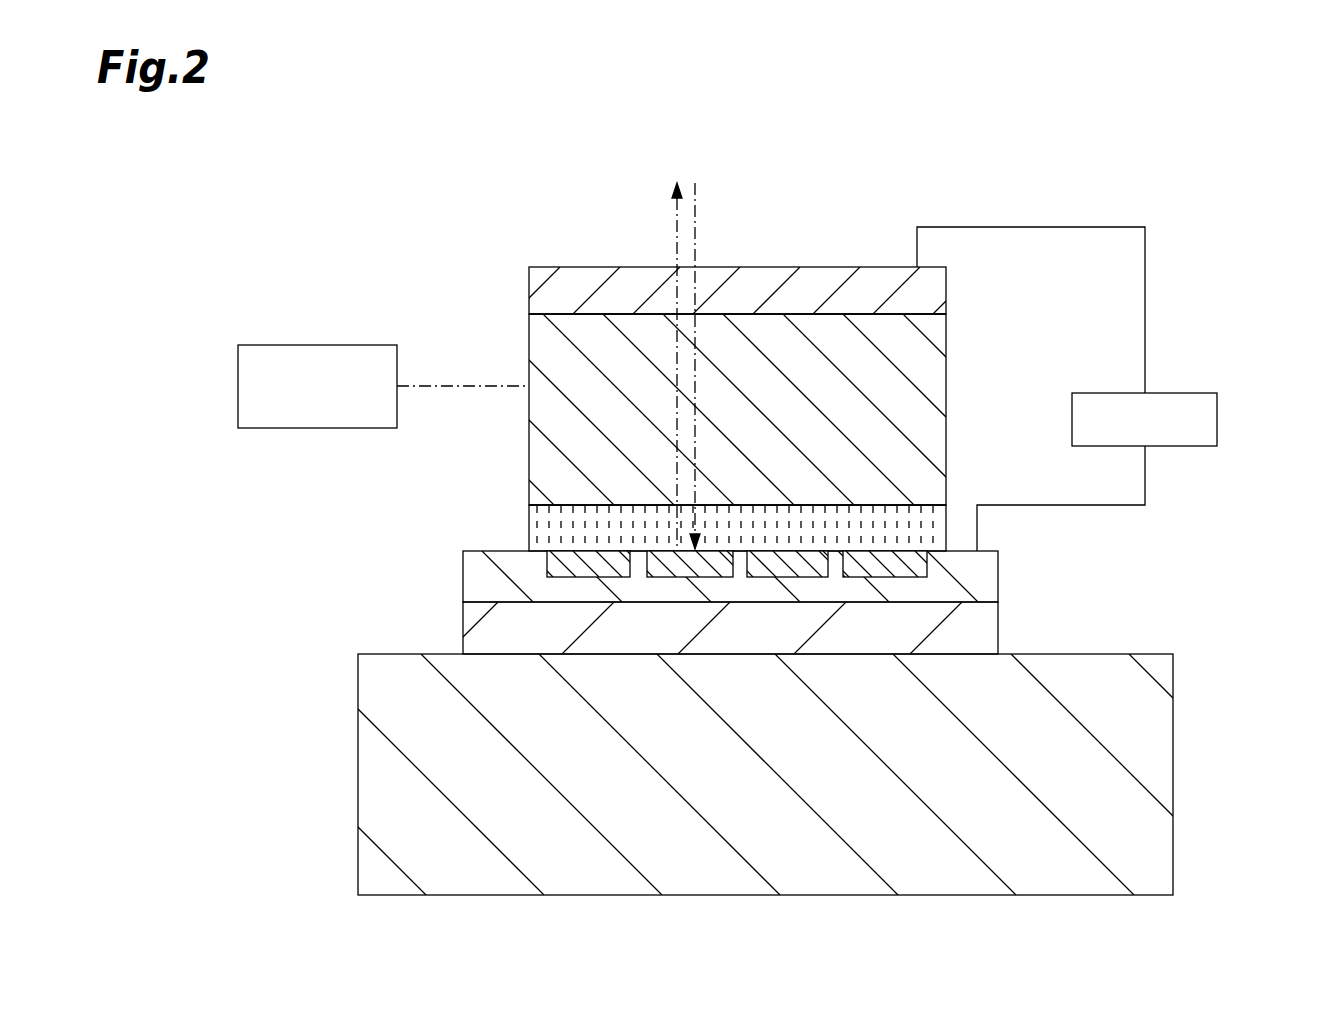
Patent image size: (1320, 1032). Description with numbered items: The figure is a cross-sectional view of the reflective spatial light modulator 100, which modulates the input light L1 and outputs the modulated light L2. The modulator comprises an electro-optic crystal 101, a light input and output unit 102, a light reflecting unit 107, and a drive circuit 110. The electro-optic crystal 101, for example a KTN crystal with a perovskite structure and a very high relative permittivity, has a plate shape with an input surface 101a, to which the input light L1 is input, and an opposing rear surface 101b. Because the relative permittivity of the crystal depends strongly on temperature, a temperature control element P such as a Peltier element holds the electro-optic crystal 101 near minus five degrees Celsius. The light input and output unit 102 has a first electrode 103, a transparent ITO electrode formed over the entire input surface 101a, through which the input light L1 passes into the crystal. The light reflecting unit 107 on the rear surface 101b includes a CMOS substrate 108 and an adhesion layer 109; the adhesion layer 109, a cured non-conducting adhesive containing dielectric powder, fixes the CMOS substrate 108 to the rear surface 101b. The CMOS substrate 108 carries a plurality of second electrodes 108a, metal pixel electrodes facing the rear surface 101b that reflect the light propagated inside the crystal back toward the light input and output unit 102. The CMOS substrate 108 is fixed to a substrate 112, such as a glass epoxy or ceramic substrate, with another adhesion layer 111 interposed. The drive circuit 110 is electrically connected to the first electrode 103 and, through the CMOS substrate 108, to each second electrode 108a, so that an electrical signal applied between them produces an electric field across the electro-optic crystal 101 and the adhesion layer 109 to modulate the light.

The spatial light modulator 100 is at (1180, 173).
The electro-optic crystal 101 is at (731, 444).
The input surface 101a is at (923, 309).
The rear surface 101b is at (905, 503).
The light input and output unit 102 is at (731, 411).
The first electrode 103 is at (528, 288).
The light reflecting unit 107 is at (650, 562).
The CMOS substrate 108 is at (668, 582).
The second electrodes 108a is at (546, 569).
The adhesion layer 109 is at (528, 523).
The drive circuit 110 is at (1218, 416).
The adhesion layer 111 is at (998, 628).
The substrate 112 is at (1173, 734).
The temperature control element P is at (237, 384).
The input light L1 is at (697, 198).
The modulated light L2 is at (677, 250).